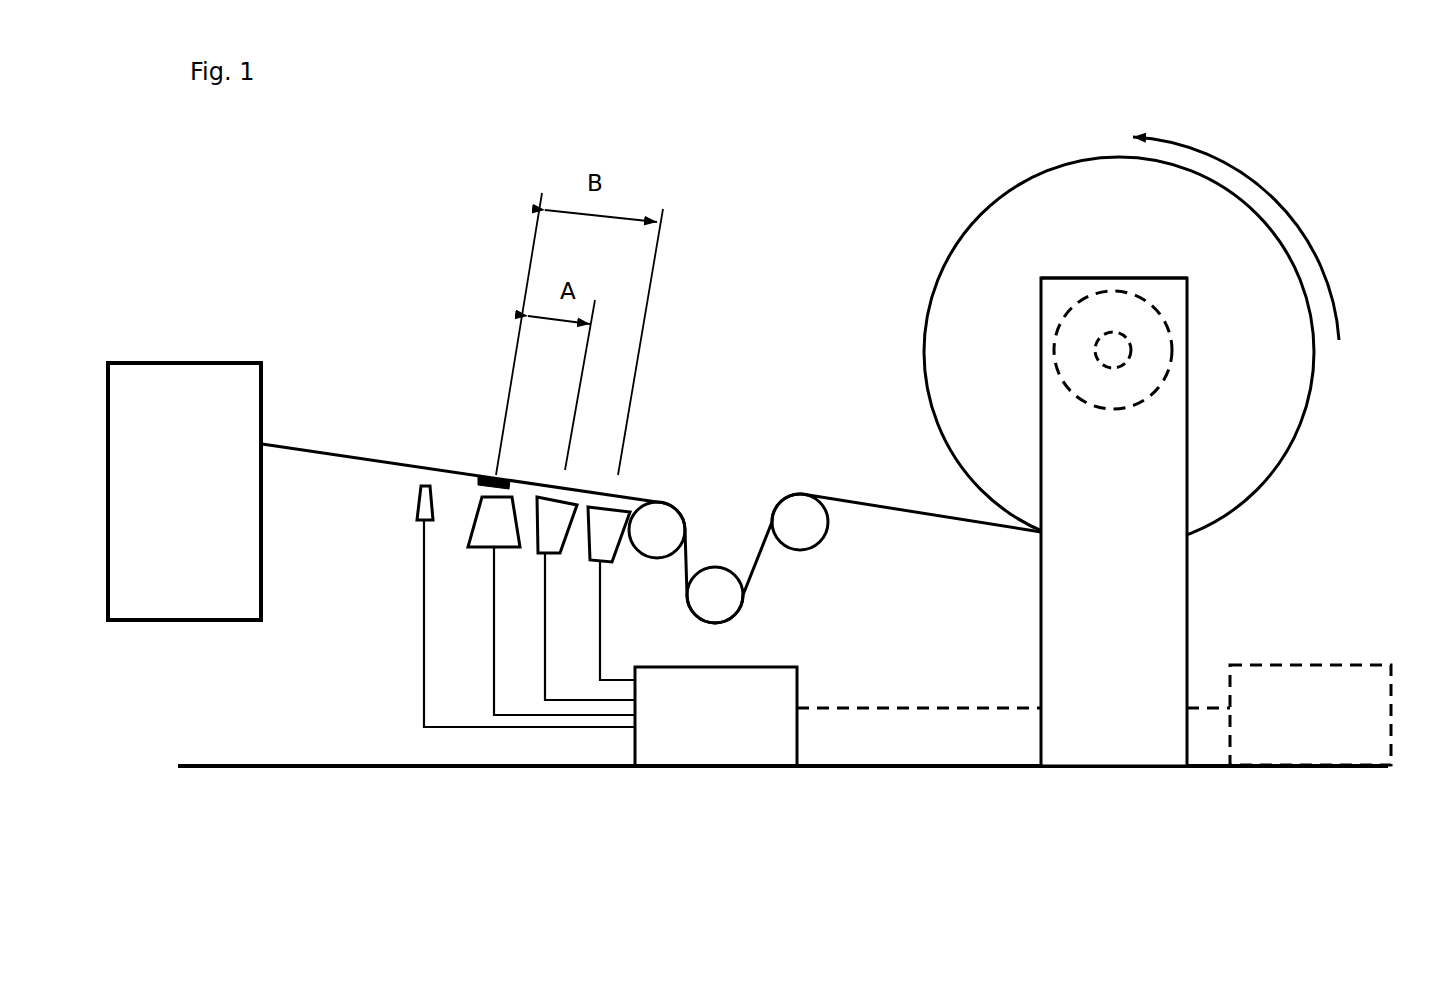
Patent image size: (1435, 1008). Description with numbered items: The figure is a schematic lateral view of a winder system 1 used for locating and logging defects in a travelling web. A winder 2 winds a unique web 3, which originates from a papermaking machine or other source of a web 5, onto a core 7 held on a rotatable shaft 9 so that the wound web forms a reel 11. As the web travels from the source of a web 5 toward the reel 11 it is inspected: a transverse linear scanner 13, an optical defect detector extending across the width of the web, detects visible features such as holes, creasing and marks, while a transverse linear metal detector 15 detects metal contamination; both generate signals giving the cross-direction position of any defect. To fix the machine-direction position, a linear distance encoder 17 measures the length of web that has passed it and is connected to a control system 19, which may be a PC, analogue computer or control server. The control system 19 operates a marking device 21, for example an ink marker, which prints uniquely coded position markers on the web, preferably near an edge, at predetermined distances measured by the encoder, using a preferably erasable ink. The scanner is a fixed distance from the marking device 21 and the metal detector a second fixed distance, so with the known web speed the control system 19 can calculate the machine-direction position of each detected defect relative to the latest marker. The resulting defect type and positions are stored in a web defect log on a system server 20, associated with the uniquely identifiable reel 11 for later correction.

The winder system 1 is at (1252, 192).
The winder 2 is at (1159, 522).
The web 3 is at (651, 492).
The source of a web 5 is at (241, 447).
The core 7 is at (1016, 207).
The rotatable shaft 9 is at (1007, 297).
The reel 11 is at (1048, 352).
The transverse linear scanner 13 is at (631, 557).
The transverse linear metal detector 15 is at (679, 556).
The linear distance encoder 17 is at (526, 558).
The control system 19 is at (838, 677).
The system server 20 is at (1310, 677).
The marking device 21 is at (569, 564).